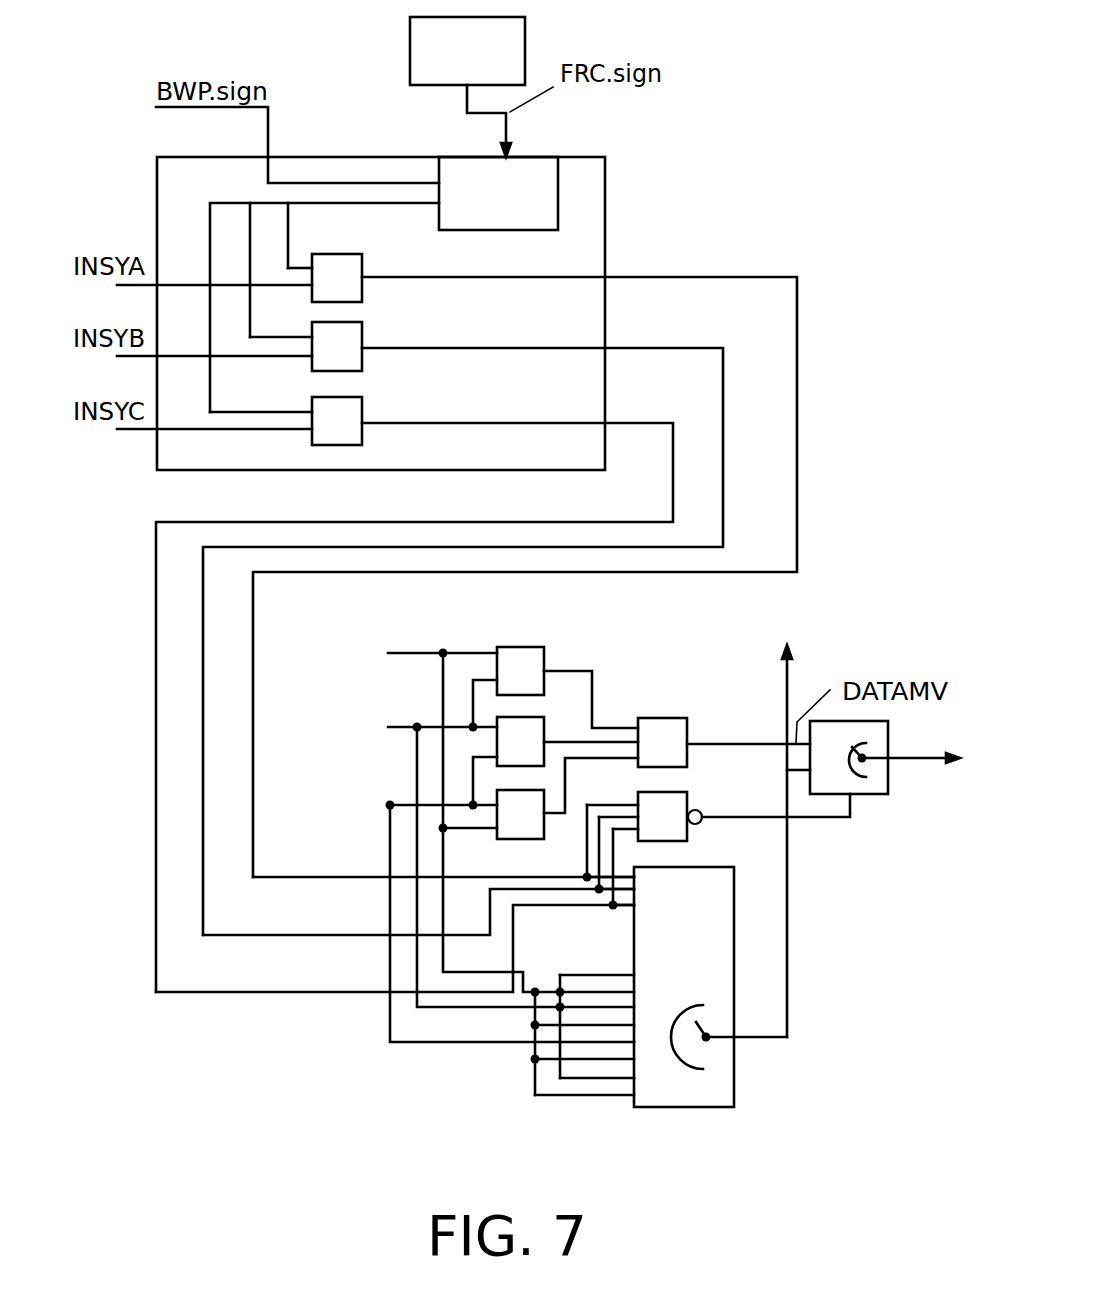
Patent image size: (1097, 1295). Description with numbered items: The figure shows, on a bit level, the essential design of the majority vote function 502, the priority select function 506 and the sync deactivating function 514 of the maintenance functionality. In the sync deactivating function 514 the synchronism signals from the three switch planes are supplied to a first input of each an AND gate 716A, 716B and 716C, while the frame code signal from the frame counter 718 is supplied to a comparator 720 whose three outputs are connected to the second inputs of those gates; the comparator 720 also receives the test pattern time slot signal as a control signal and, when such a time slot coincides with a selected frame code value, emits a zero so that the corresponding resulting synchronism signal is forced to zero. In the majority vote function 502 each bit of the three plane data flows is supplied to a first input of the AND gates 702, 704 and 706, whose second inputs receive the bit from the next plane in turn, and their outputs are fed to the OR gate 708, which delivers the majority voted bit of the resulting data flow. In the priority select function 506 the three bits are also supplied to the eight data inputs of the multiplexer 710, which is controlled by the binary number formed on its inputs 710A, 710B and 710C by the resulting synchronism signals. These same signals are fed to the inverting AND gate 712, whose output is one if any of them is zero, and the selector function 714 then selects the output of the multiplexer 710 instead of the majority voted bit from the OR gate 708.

The majority vote function 502 is at (694, 667).
The priority select function 506 is at (842, 925).
The sync deactivating function 514 is at (623, 220).
The AND gate 702 is at (544, 648).
The AND gate 704 is at (537, 728).
The AND gate 706 is at (538, 802).
The OR gate 708 is at (680, 727).
The multiplexer 710 is at (718, 1095).
The multiplexer input 710A is at (640, 878).
The multiplexer input 710B is at (637, 892).
The multiplexer input 710C is at (637, 905).
The inverting AND gate 712 is at (680, 802).
The selector function 714 is at (878, 787).
The AND gate 716A is at (355, 287).
The AND gate 716B is at (355, 357).
The AND gate 716C is at (355, 432).
The frame counter 718 is at (534, 29).
The comparator 720 is at (537, 172).